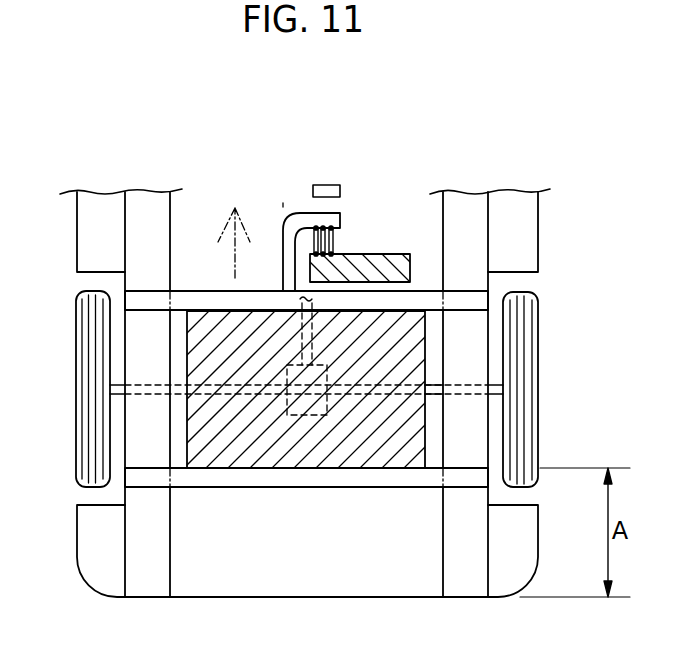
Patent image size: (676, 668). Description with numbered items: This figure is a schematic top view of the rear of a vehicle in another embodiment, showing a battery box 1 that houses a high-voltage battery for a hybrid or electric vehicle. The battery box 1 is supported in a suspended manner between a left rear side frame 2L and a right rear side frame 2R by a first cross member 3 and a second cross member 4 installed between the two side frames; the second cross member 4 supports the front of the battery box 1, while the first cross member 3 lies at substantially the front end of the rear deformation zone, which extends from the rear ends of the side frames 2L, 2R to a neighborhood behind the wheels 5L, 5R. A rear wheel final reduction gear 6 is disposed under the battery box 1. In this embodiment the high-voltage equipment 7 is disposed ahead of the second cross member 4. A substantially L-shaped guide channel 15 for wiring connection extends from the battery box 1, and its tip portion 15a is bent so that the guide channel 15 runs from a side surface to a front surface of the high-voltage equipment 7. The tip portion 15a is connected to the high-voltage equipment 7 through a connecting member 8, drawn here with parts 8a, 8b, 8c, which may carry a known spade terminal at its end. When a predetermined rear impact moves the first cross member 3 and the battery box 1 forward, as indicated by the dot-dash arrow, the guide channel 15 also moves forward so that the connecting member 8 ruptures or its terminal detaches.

The battery box 1 is at (220, 450).
The left rear side frame 2L is at (150, 203).
The right rear side frame 2R is at (467, 202).
The first cross member 3 is at (398, 478).
The second cross member 4 is at (473, 303).
The left wheel 5L is at (75, 323).
The right wheel 5R is at (540, 320).
The rear wheel final reduction gear 6 is at (300, 417).
The high-voltage equipment 7 is at (395, 263).
The connecting member 8 is at (333, 165).
The first sensor element 8a is at (315, 225).
The second sensor element 8b is at (323, 226).
The third sensor element 8c is at (356, 190).
The guide channel 15 is at (283, 238).
The tip portion 15a is at (302, 220).